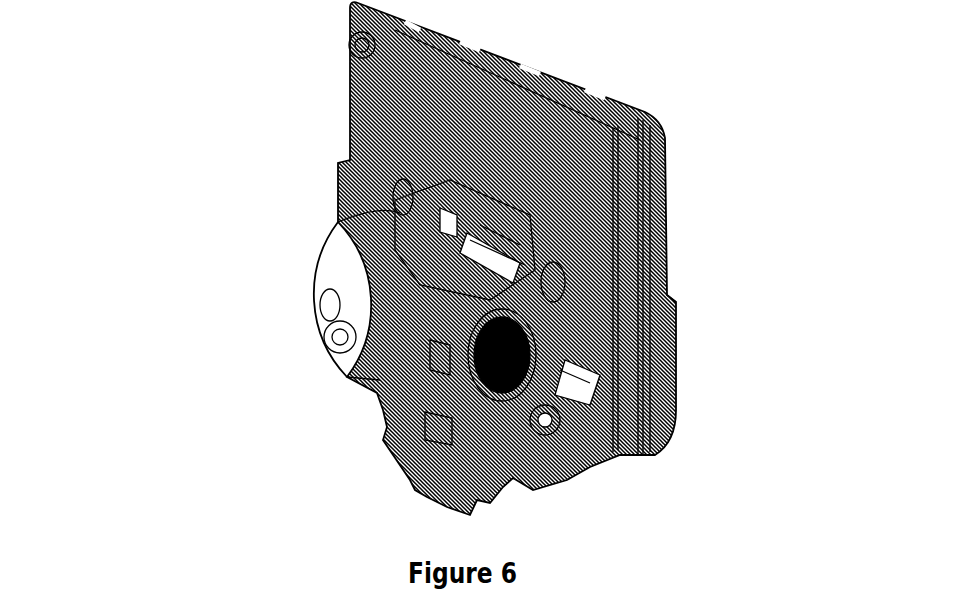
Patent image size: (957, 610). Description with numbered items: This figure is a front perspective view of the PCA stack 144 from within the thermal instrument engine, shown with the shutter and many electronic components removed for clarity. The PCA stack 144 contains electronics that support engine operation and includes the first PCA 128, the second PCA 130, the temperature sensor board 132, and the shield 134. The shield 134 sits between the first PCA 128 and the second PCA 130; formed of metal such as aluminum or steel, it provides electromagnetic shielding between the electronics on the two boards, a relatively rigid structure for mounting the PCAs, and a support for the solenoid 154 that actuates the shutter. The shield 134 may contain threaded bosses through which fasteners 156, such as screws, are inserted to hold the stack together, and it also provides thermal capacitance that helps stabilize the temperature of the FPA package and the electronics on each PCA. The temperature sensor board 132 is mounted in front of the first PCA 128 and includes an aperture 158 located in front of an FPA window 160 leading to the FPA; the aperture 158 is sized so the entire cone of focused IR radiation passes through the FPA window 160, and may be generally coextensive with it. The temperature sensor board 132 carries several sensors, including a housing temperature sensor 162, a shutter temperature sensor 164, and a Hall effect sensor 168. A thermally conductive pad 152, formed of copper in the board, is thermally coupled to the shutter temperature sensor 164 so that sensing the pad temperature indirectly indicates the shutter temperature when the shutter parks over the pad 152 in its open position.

The first PCA 128 is at (378, 78).
The second PCA 130 is at (630, 113).
The temperature sensor board 132 is at (330, 240).
The shield 134 is at (543, 112).
The PCA stack 144 is at (441, 263).
The thermally conductive pad 152 is at (507, 347).
The solenoid 154 is at (443, 237).
The fasteners 156 is at (540, 427).
The aperture 158 is at (417, 332).
The FPA window 160 is at (440, 353).
The housing temperature sensor 162 is at (318, 295).
The shutter temperature sensor 164 is at (533, 380).
The Hall effect sensor 168 is at (428, 435).